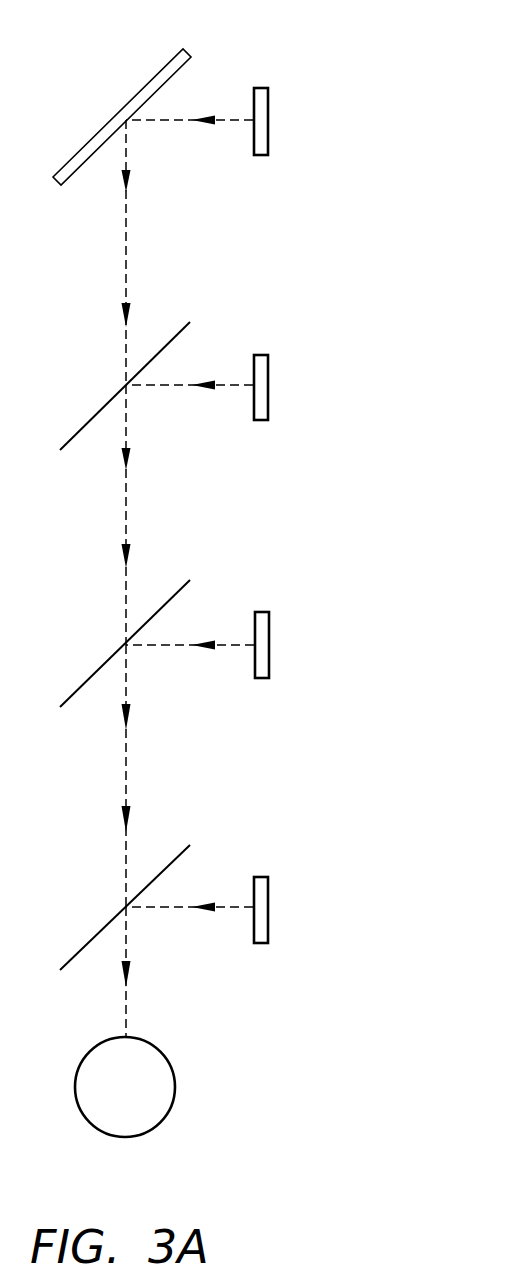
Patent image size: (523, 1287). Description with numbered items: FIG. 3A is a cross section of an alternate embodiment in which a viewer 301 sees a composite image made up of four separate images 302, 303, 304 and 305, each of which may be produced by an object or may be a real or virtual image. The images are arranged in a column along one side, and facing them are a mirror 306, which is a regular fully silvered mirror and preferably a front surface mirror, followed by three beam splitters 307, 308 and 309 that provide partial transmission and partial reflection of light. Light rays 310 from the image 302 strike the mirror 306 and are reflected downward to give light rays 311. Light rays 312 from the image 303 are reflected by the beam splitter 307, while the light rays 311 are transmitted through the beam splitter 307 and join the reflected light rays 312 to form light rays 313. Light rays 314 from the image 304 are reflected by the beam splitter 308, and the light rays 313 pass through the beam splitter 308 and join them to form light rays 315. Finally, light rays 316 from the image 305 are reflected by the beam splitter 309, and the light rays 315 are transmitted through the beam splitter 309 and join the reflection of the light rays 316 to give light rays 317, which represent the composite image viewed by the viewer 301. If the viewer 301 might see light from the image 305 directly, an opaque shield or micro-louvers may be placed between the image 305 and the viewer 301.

The viewer 301 is at (82, 1060).
The image 302 is at (270, 105).
The image 303 is at (270, 376).
The image 304 is at (270, 665).
The image 305 is at (270, 898).
The mirror 306 is at (160, 70).
The beam splitter 307 is at (178, 335).
The beam splitter 308 is at (182, 592).
The beam splitter 309 is at (178, 855).
The light rays 310 is at (165, 122).
The light rays 311 is at (124, 235).
The light rays 312 is at (165, 387).
The light rays 313 is at (124, 500).
The light rays 314 is at (165, 645).
The light rays 315 is at (124, 765).
The light rays 316 is at (152, 908).
The light rays 317 is at (124, 1010).